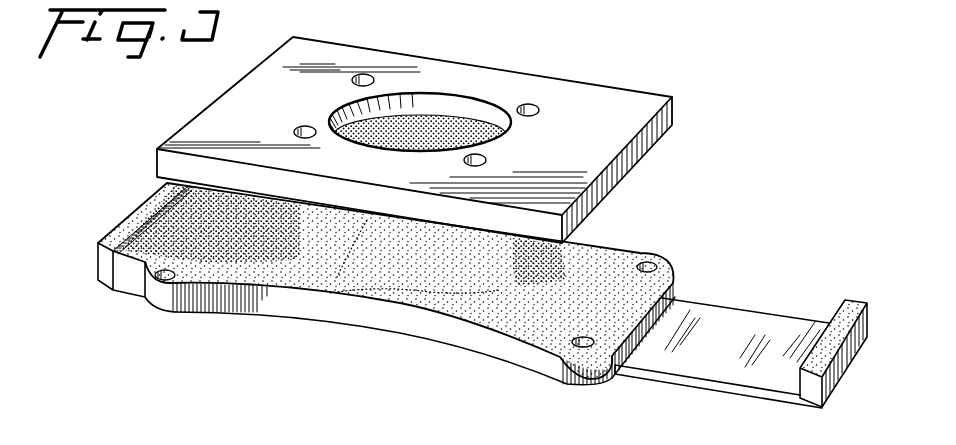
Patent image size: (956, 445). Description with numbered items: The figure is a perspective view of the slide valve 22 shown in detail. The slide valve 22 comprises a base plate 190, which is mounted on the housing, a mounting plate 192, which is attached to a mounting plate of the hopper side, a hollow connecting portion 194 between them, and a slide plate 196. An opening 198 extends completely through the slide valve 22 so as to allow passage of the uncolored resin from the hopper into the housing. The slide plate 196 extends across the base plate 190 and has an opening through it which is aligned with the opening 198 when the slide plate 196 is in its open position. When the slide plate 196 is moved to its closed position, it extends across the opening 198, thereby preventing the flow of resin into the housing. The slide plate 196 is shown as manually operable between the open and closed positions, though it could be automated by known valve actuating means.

The slide valve 22 is at (585, 235).
The base plate 190 is at (287, 303).
The mounting plate 192 is at (175, 138).
The hollow connecting portion 194 is at (388, 249).
The slide plate 196 is at (763, 315).
The opening 198 is at (497, 125).